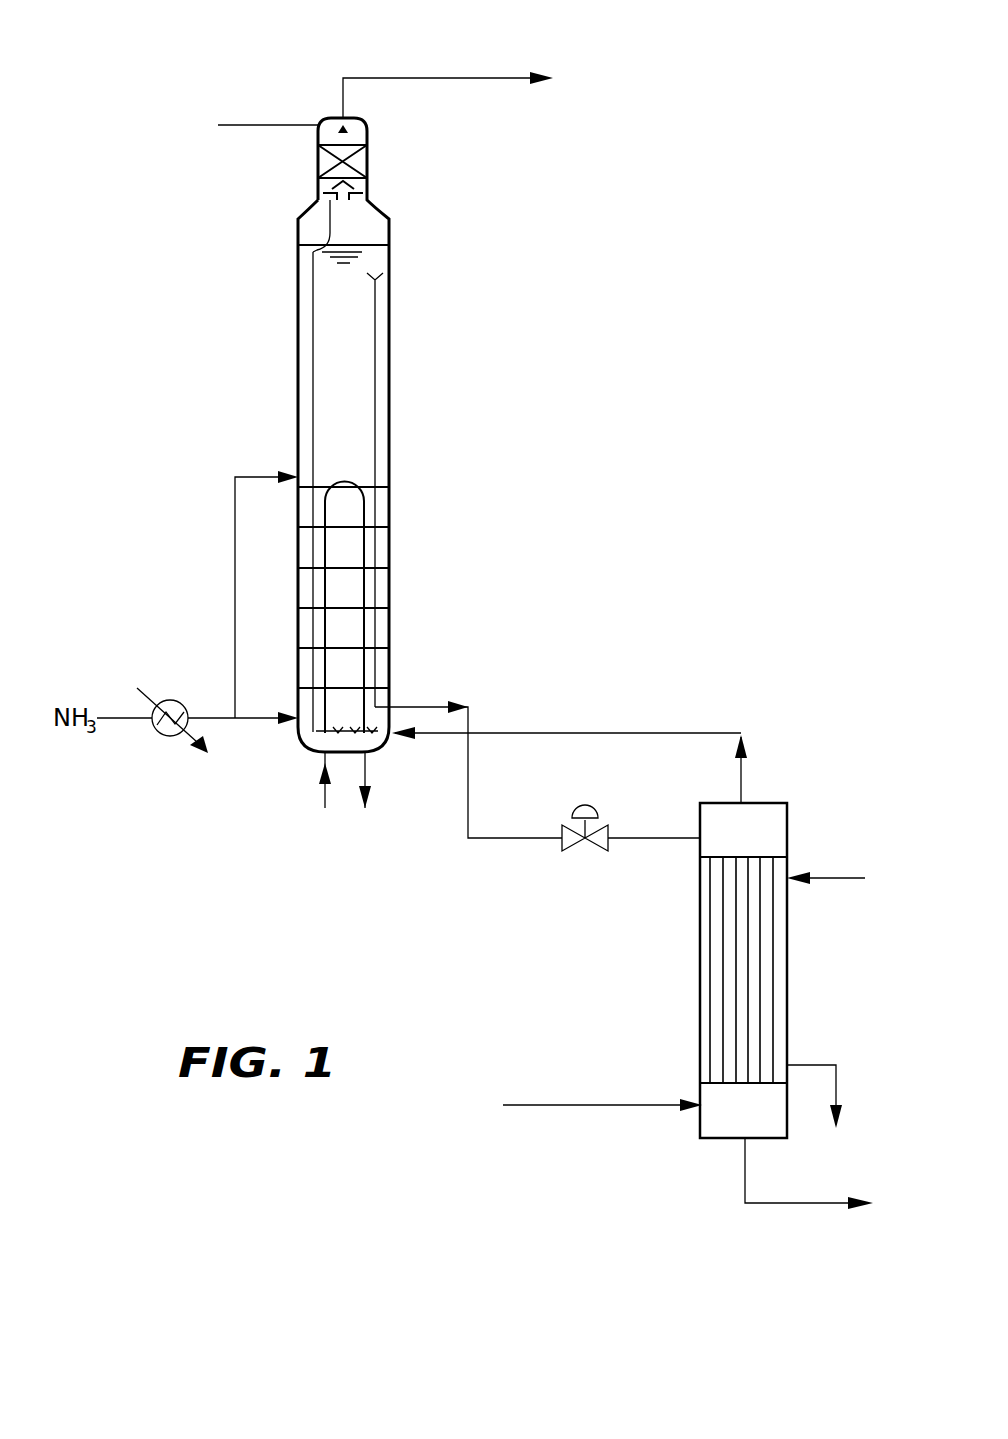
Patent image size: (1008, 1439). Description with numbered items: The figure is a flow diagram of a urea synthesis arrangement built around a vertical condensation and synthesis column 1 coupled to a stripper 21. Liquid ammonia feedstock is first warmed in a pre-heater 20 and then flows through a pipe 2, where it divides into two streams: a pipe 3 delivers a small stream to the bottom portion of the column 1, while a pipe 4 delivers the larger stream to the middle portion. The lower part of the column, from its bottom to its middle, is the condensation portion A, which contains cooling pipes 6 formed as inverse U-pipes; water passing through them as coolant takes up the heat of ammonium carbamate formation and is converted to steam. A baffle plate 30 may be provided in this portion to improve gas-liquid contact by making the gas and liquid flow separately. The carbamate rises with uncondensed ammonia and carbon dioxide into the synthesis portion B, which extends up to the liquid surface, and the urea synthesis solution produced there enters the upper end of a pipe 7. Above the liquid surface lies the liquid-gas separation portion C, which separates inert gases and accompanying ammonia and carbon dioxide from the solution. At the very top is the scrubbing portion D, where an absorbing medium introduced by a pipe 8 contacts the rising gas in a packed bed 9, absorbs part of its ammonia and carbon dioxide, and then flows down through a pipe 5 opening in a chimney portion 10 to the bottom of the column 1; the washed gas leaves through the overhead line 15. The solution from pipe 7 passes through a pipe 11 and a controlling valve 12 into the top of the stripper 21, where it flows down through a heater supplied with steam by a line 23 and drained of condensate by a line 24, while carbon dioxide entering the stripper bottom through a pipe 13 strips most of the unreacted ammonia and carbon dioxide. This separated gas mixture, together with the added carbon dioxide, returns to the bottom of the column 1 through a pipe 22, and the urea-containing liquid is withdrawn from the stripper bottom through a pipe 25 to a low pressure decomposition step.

The vertical condensation and synthesis column 1 is at (392, 420).
The pipe 2 is at (215, 720).
The pipe 3 is at (273, 726).
The pipe 4 is at (252, 472).
The pipe 5 is at (313, 350).
The cooling pipes 6 is at (370, 773).
The pipe 7 is at (378, 465).
The pipe 8 is at (230, 128).
The packed bed 9 is at (370, 168).
The chimney portion 10 is at (368, 192).
The pipe 11 is at (492, 847).
The controlling valve 12 is at (593, 850).
The pipe 13 is at (610, 1108).
The overhead outlet line 15 is at (478, 76).
The pre-heater 20 is at (168, 740).
The stripper 21 is at (787, 967).
The pipe 22 is at (604, 731).
The line 23 is at (832, 872).
The line 24 is at (838, 1084).
The pipe 25 is at (795, 1206).
The baffle plate 30 is at (345, 647).
The condensation portion A is at (348, 553).
The synthesis portion B is at (350, 378).
The liquid-gas separation portion C is at (363, 227).
The scrubbing portion D is at (368, 153).